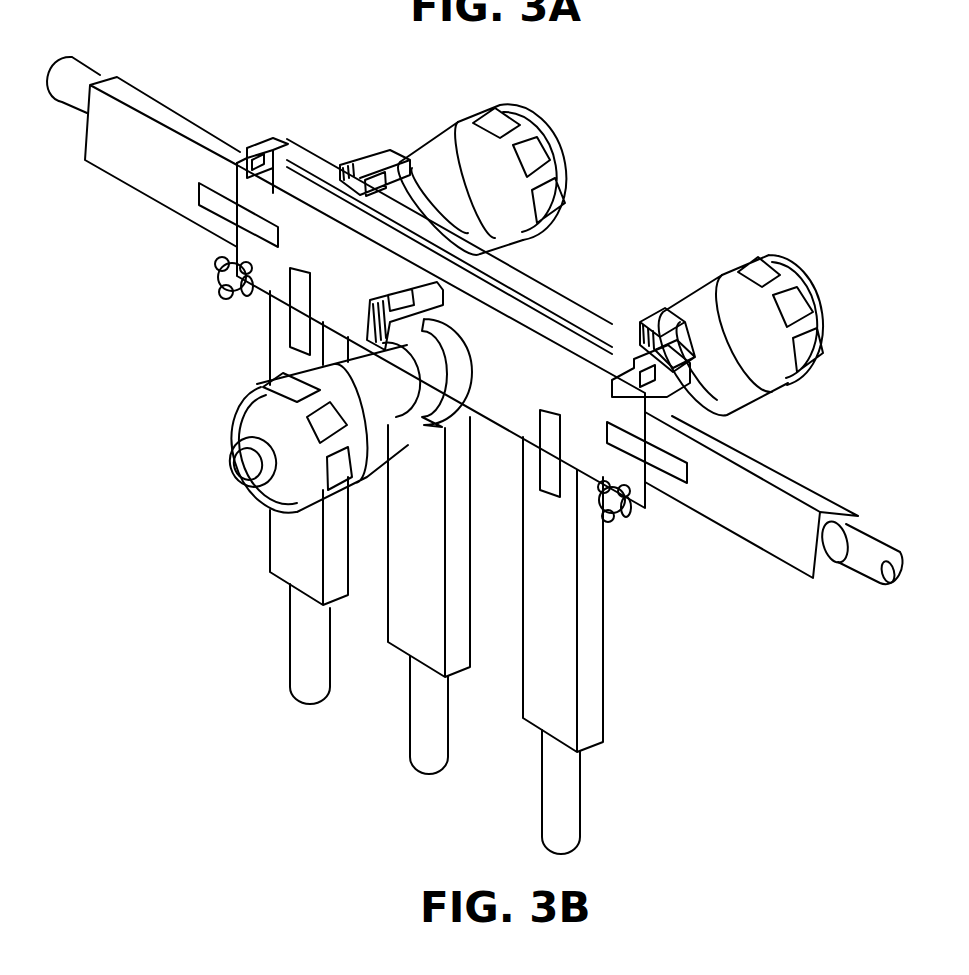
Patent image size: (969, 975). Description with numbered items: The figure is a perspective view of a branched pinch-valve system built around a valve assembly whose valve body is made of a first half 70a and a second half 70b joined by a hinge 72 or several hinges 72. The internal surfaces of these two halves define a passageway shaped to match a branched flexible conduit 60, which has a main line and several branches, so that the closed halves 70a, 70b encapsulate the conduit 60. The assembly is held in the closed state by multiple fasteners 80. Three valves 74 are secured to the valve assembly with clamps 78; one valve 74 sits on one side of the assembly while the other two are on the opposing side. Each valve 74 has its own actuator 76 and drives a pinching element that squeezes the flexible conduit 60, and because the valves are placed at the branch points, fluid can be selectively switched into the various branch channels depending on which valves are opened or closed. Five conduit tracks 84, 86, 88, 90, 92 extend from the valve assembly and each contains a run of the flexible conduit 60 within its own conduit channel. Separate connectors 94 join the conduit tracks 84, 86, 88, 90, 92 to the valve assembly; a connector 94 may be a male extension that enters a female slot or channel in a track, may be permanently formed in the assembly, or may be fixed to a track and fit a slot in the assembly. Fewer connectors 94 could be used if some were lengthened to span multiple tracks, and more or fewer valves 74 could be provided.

The flexible conduit 60 is at (80, 70).
The first half 70a is at (555, 381).
The second half 70b is at (530, 290).
The hinge 72 is at (272, 167).
The valve 74 is at (565, 165).
The actuator 76 is at (442, 148).
The clamp 78 is at (383, 162).
The fastener 80 is at (222, 292).
The conduit track 84 is at (158, 173).
The conduit track 86 is at (282, 535).
The conduit track 88 is at (418, 610).
The conduit track 90 is at (542, 693).
The conduit track 92 is at (753, 530).
The connector 94 is at (277, 223).